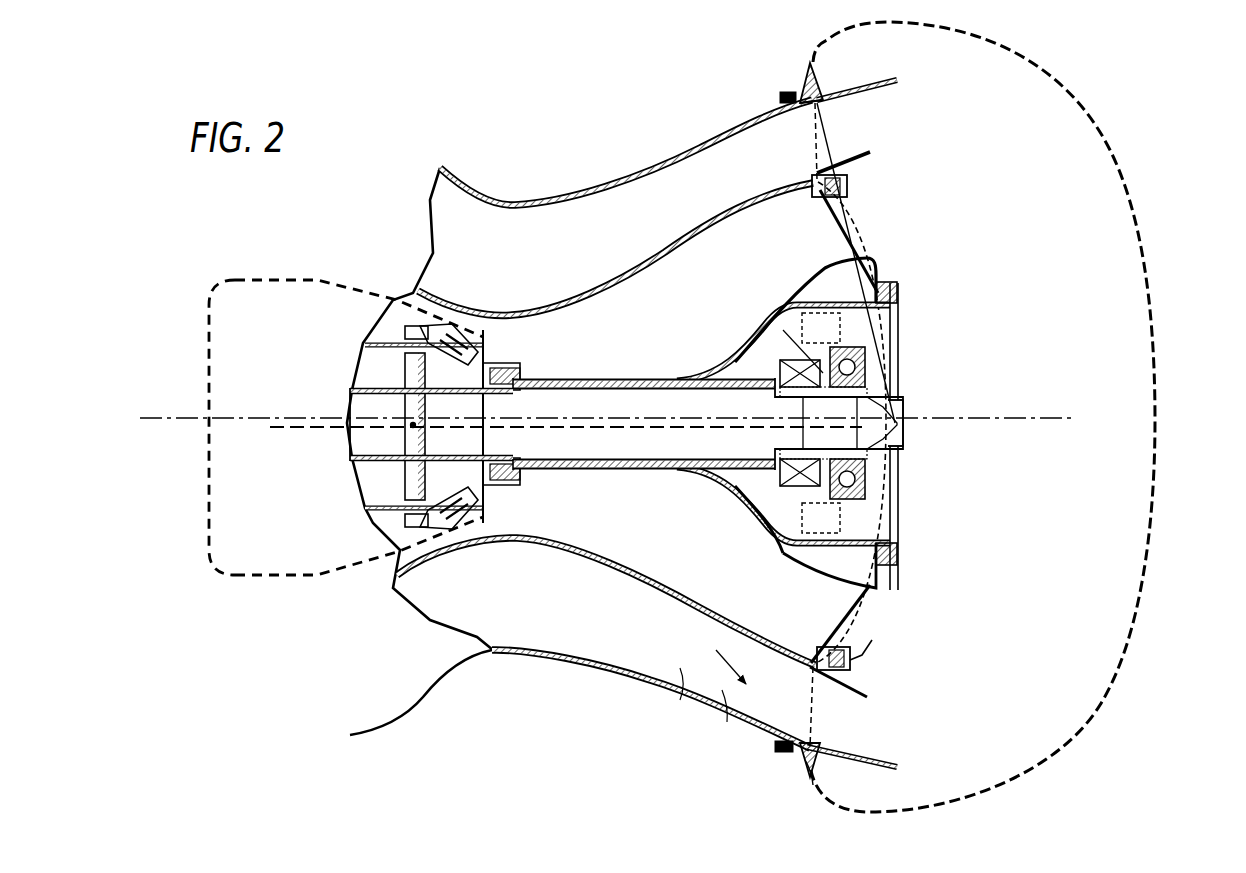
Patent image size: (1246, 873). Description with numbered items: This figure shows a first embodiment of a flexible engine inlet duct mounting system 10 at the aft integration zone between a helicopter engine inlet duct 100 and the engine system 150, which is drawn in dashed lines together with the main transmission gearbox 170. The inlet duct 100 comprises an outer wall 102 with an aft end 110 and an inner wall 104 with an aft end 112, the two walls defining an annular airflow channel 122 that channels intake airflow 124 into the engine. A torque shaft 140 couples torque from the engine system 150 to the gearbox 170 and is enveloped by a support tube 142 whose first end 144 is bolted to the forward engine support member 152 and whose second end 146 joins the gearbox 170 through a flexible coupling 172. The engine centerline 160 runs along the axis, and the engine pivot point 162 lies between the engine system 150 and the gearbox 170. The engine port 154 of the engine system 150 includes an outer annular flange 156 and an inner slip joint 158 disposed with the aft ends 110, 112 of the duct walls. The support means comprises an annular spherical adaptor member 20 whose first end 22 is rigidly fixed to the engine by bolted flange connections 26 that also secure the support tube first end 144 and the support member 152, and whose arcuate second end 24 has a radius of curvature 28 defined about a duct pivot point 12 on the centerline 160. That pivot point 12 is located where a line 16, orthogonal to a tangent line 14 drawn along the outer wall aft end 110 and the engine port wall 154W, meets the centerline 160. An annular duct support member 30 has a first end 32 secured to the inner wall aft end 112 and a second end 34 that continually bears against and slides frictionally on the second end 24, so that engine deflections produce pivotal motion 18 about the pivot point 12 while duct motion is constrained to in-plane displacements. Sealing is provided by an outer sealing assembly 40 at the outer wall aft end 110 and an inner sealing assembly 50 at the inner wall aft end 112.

The flexible engine inlet duct mounting system 10 is at (936, 650).
The duct pivot point 12 is at (904, 418).
The tangent line 14 is at (807, 110).
The orthogonal line 16 is at (850, 225).
The pivotal motion 18 is at (231, 417).
The annular spherical adaptor member 20 is at (884, 594).
The first end of the adaptor member 22 is at (898, 570).
The second end of the adaptor member 24 is at (810, 569).
The bolted flange connections 26 is at (898, 291).
The radius of curvature 28 is at (830, 339).
The annular duct support member 30 is at (830, 613).
The first end of the duct support member 32 is at (840, 203).
The second end of the duct support member 34 is at (780, 557).
The outer sealing assembly 40 is at (794, 775).
The inner sealing assembly 50 is at (866, 662).
The engine inlet duct 100 is at (531, 660).
The outer wall 102 is at (612, 672).
The inner wall 104 is at (665, 596).
The aft end of the outer wall 110 is at (795, 108).
The aft end of the inner wall 112 is at (812, 186).
The annular airflow channel 122 is at (664, 699).
The intake airflow 124 is at (726, 704).
The torque shaft 140 is at (603, 379).
The support tube 142 is at (665, 380).
The first end of the support tube 144 is at (879, 270).
The second end of the support tube 146 is at (526, 378).
The engine system 150 is at (1157, 306).
The forward engine support member 152 is at (895, 307).
The engine port 154 is at (862, 152).
The engine port wall 154W is at (820, 754).
The outer annular flange 156 is at (818, 762).
The inner slip joint 158 is at (862, 679).
The engine centerline 160 is at (303, 431).
The engine pivot point 162 is at (413, 425).
The main transmission gearbox 170 is at (207, 560).
The flexible coupling 172 is at (457, 327).